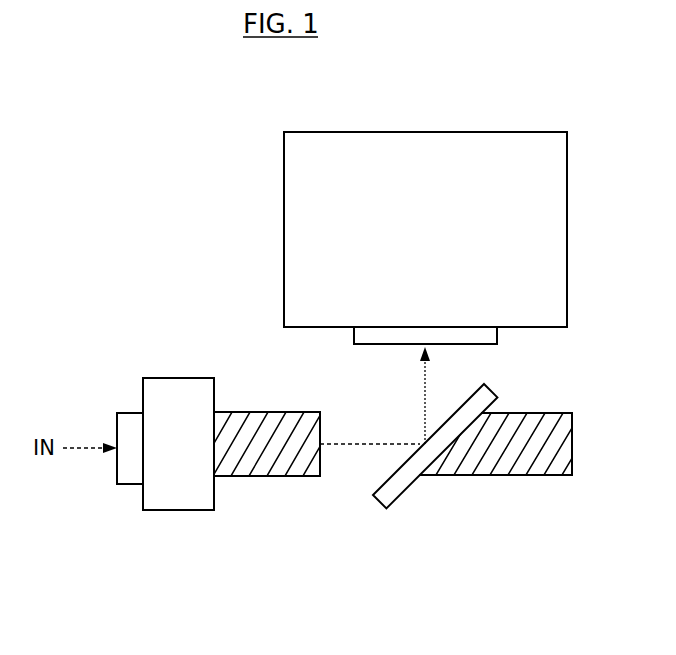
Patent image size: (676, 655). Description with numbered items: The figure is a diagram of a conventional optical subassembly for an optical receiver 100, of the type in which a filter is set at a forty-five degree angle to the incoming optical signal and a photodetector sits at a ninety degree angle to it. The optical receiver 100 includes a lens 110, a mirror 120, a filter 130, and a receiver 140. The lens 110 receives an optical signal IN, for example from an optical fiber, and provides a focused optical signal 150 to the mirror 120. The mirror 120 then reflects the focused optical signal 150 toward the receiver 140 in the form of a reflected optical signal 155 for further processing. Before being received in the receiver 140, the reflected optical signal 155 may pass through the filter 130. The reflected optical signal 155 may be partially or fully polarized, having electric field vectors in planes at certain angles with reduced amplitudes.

The optical receiver 100 is at (150, 116).
The lens 110 is at (181, 511).
The mirror 120 is at (413, 490).
The filter 130 is at (497, 343).
The receiver 140 is at (567, 178).
The focused optical signal 150 is at (346, 444).
The reflected optical signal 155 is at (422, 382).